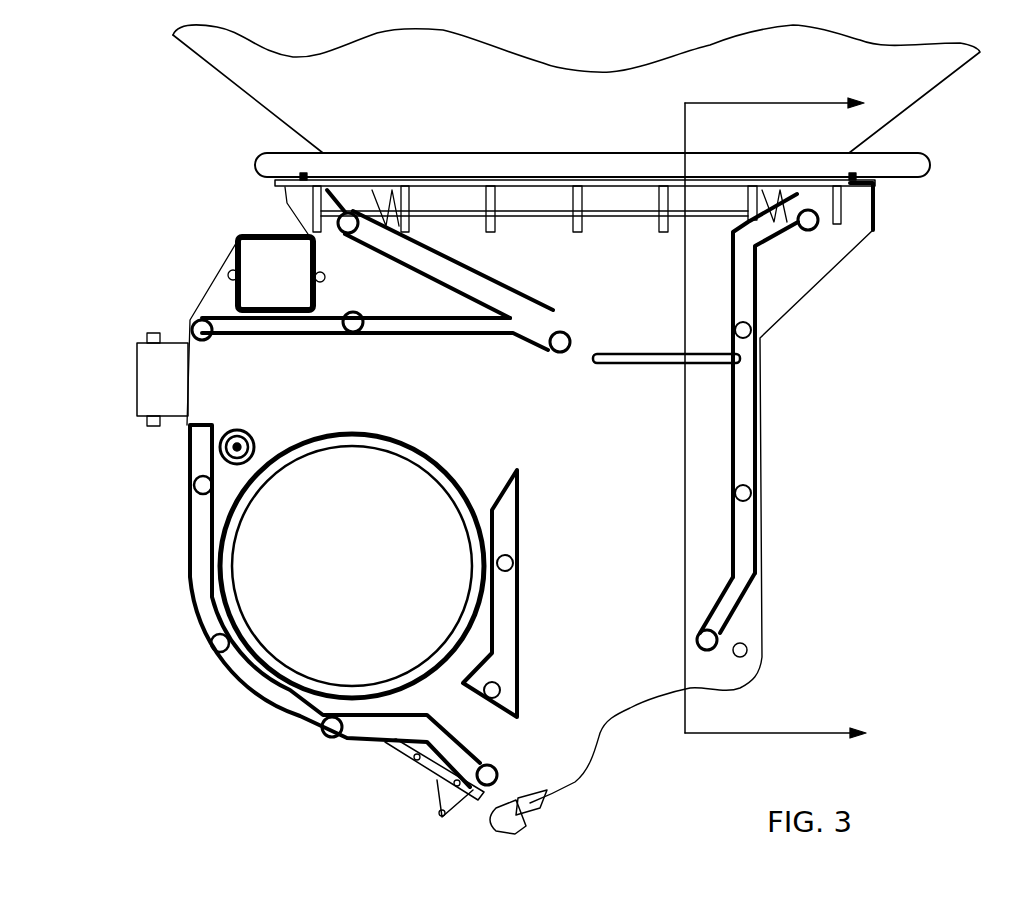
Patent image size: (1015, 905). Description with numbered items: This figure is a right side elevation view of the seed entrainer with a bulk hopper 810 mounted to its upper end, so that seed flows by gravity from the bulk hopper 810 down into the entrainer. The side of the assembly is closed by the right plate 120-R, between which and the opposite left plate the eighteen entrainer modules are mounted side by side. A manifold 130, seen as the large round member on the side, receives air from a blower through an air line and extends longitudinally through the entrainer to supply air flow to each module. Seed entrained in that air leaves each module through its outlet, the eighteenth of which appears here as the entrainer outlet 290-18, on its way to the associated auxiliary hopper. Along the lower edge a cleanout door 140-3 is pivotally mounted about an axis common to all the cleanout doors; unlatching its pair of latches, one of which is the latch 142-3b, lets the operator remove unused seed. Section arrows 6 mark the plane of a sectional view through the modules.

The section line 6- 6 is at (777, 424).
The bulk hopper 810 is at (945, 80).
The manifold 130 is at (273, 552).
The entrainer outlet 290-18 is at (137, 376).
The right plate 120-R is at (717, 542).
The cleanout door 140-3 is at (410, 763).
The latch 142-3b is at (513, 827).